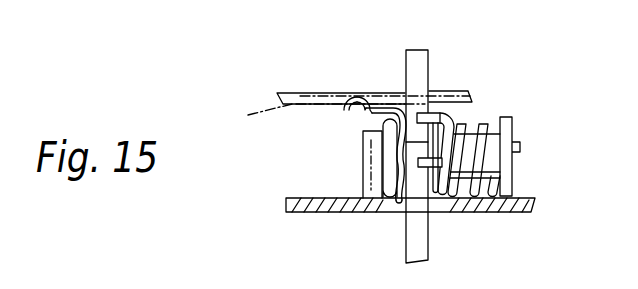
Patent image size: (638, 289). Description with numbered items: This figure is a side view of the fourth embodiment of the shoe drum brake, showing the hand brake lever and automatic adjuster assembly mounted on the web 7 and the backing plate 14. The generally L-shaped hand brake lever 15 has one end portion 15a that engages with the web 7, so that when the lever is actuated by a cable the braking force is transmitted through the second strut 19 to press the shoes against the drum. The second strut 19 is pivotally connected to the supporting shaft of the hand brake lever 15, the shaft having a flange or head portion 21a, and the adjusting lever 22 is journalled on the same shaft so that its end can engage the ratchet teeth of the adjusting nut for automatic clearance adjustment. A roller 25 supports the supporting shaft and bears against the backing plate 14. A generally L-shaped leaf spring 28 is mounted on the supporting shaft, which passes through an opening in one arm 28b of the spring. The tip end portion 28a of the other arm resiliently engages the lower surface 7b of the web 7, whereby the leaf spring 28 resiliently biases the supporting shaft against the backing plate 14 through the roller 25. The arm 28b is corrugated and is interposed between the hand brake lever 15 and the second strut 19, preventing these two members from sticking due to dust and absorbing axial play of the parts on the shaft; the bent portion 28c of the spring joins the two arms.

The web 7 is at (297, 93).
The lower surface of the web 7b is at (258, 117).
The backing plate 14 is at (319, 213).
The hand brake lever 15 is at (430, 242).
The end portion of the hand brake lever 15a is at (429, 70).
The second strut 19 is at (378, 122).
The head portion of the supporting shaft 21a is at (513, 125).
The adjusting lever 22 is at (438, 205).
The roller 25 is at (363, 175).
The leaf spring 28 is at (354, 135).
The tip end portion of the leaf spring 28a is at (351, 97).
The arm of the leaf spring 28b is at (401, 212).
The bent portion of clip 28c is at (366, 97).